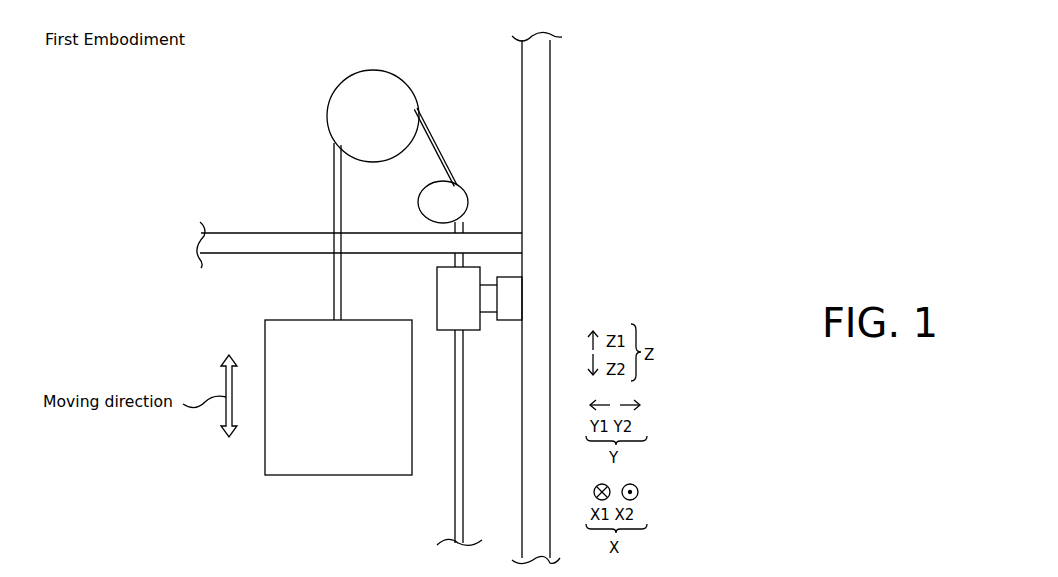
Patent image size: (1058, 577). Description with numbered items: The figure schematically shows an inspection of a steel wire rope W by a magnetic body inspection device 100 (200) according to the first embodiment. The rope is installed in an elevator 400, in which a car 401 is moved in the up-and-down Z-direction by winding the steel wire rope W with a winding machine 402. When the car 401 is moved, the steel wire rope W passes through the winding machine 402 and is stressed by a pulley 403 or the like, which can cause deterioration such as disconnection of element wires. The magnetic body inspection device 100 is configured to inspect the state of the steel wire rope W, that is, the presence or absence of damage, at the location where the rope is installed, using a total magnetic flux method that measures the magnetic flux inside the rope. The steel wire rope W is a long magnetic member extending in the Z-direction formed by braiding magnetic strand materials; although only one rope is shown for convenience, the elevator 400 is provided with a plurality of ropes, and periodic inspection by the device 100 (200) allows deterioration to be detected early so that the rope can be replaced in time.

The elevator 400 is at (205, 150).
The car 401 is at (243, 467).
The winding machine 402 is at (313, 102).
The pulley 403 is at (402, 83).
The steel wire rope W is at (455, 496).
The magnetic body inspection device 100 is at (475, 339).
The magnetic body inspection device 200 is at (479, 347).